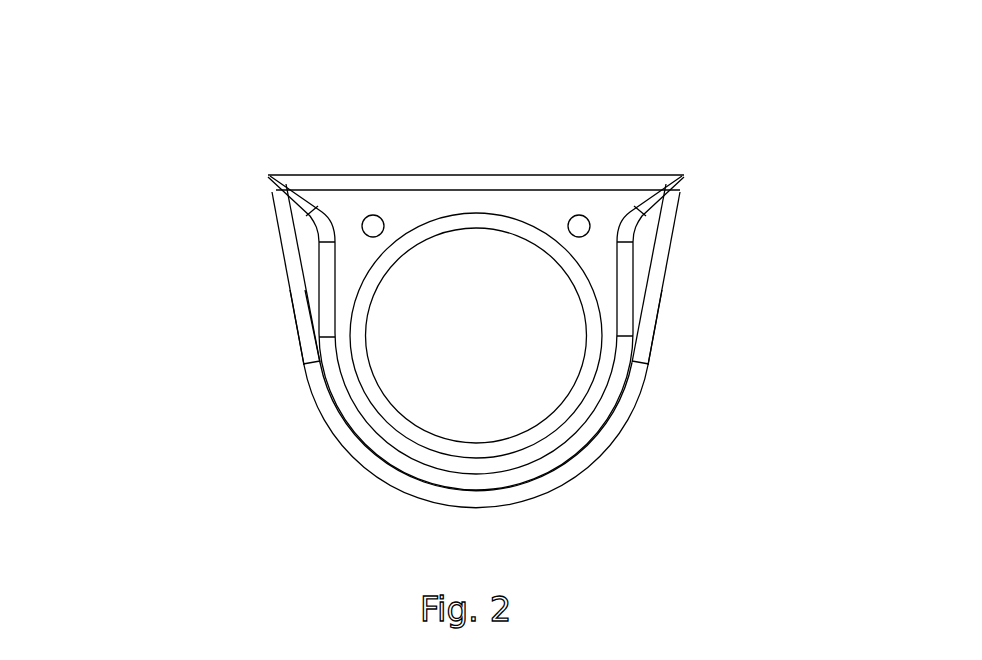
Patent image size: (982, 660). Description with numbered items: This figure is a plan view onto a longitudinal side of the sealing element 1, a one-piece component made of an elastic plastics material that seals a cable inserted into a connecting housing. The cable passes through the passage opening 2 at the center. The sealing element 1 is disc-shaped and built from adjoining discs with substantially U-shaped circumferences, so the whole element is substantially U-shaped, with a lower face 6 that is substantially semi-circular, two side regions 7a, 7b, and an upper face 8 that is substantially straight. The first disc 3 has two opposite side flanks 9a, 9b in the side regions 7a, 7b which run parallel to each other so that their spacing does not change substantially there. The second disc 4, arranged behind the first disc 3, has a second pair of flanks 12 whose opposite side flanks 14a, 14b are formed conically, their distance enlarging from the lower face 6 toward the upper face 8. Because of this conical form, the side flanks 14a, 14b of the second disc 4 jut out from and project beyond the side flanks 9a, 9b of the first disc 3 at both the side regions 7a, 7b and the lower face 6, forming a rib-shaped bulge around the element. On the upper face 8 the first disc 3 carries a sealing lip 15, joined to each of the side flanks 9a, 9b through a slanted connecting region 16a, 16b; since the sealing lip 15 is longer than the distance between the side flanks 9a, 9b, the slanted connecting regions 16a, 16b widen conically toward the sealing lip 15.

The sealing element 1 is at (173, 100).
The passage opening 2 is at (540, 383).
The first disc 3 is at (540, 207).
The second disc 4 is at (641, 245).
The lower face 6 is at (428, 515).
The side region 7a is at (235, 427).
The side region 7b is at (675, 462).
The upper face 8 is at (377, 155).
The side flank 9a is at (328, 264).
The side flank 9b is at (621, 273).
The second pair of flanks 12 is at (298, 330).
The side flank 14a is at (293, 307).
The side flank 14b is at (650, 292).
The sealing lip 15 is at (467, 184).
The slanted connecting region 16a is at (293, 196).
The slanted connecting region 16b is at (656, 198).